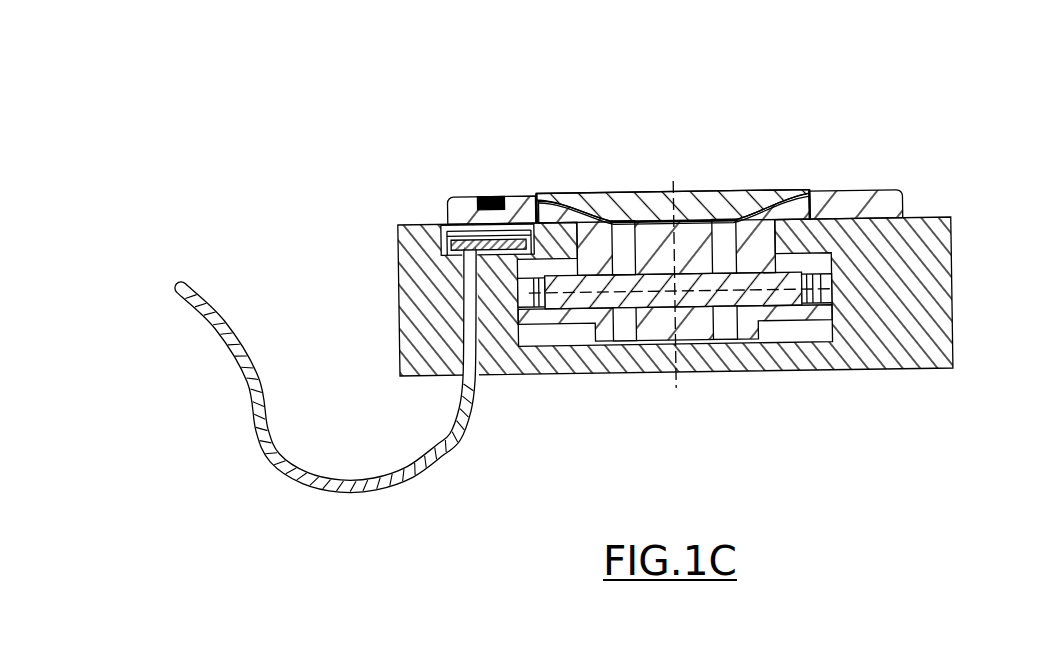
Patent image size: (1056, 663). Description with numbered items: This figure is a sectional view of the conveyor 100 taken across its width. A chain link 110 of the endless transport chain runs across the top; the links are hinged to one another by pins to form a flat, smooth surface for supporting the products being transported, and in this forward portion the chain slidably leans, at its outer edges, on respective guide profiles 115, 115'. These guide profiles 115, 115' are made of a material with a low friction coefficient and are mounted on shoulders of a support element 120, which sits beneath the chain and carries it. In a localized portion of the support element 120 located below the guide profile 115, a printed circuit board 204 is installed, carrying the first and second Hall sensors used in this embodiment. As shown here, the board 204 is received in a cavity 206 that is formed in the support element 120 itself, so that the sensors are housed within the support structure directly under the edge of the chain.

The conveyor 100 is at (434, 108).
The chain link 110 is at (656, 197).
The guide profile 115 is at (442, 191).
The guide profile 115' is at (910, 182).
The support element 120 is at (885, 385).
The printed circuit board 204 is at (499, 241).
The cavity 206 is at (454, 247).